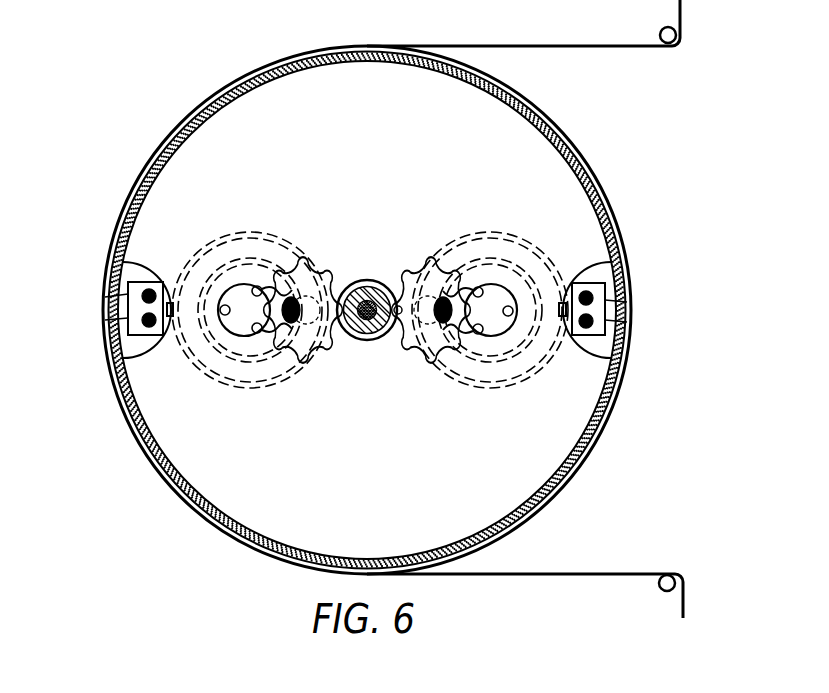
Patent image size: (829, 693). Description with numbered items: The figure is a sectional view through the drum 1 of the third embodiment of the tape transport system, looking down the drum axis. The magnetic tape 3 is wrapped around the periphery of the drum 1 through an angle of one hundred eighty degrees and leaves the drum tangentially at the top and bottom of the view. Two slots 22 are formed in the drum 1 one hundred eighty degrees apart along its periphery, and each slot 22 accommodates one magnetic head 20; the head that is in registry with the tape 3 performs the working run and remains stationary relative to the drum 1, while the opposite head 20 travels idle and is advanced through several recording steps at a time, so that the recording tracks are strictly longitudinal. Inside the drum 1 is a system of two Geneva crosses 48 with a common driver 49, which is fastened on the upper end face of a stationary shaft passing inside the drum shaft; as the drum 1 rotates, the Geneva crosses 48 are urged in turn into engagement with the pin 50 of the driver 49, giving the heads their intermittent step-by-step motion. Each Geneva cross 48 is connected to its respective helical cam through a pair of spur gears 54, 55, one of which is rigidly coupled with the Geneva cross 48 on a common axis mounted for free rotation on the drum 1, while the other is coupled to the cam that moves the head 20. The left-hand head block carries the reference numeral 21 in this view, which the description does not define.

The drum 1 is at (611, 411).
The tape 3 is at (598, 49).
The magnetic head 20 is at (105, 328).
The left connector block 21 is at (105, 297).
The slot 22 is at (627, 302).
The Geneva cross 48 is at (322, 283).
The driver 49 is at (370, 345).
The pin 50 is at (389, 281).
The spur gear 54 is at (231, 353).
The spur gear 55 is at (307, 337).